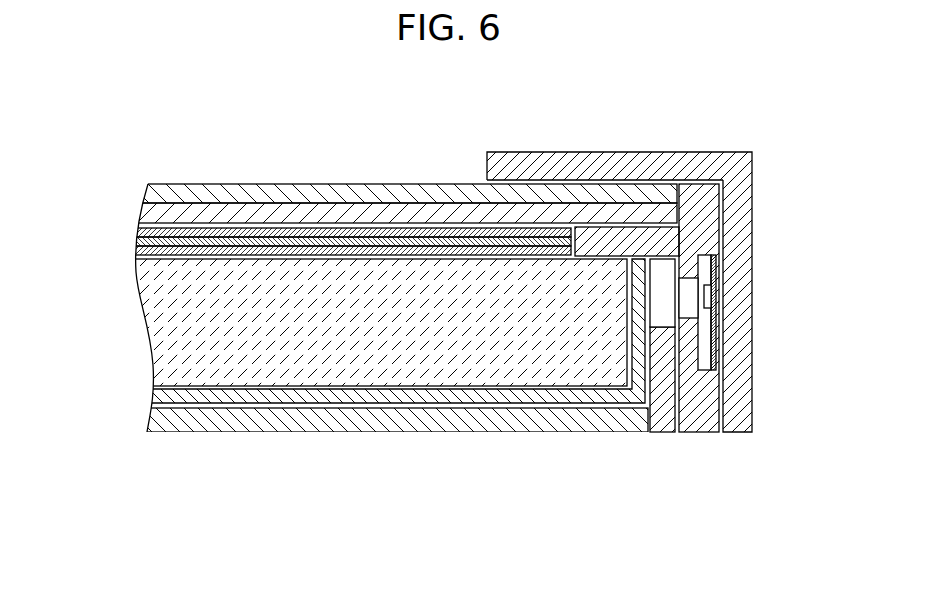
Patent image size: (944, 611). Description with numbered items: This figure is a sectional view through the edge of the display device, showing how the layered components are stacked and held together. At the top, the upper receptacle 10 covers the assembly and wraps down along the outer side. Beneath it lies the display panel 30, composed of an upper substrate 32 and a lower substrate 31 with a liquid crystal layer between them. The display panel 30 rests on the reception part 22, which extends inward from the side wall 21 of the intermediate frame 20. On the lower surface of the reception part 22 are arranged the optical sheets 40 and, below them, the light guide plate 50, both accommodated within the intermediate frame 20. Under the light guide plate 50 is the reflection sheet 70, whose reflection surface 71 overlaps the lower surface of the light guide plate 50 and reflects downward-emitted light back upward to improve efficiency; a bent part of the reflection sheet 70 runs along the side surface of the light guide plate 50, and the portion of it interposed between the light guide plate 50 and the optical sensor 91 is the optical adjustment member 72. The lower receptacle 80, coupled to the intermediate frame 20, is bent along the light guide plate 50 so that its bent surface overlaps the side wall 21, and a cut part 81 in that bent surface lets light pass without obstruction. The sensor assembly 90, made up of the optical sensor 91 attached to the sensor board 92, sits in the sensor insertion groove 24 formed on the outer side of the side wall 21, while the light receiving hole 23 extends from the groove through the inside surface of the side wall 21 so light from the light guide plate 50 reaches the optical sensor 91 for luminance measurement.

The upper receptacle 10 is at (613, 163).
The intermediate frame 20 is at (716, 308).
The side wall 21 is at (703, 202).
The reception part 22 is at (637, 240).
The light receiving hole 23 is at (685, 290).
The sensor insertion groove 24 is at (704, 267).
The display panel 30 is at (354, 195).
The lower substrate 31 is at (148, 213).
The upper substrate 32 is at (160, 193).
The optical sheets 40 is at (128, 227).
The light guide plate 50 is at (160, 323).
The reflection sheet 70 is at (402, 399).
The reflection surface 71 is at (578, 393).
The optical adjustment member 72 is at (641, 407).
The lower receptacle 80 is at (250, 424).
The cut part 81 is at (655, 303).
The sensor assembly 90 is at (781, 306).
The optical sensor 91 is at (711, 295).
The sensor board 92 is at (722, 325).